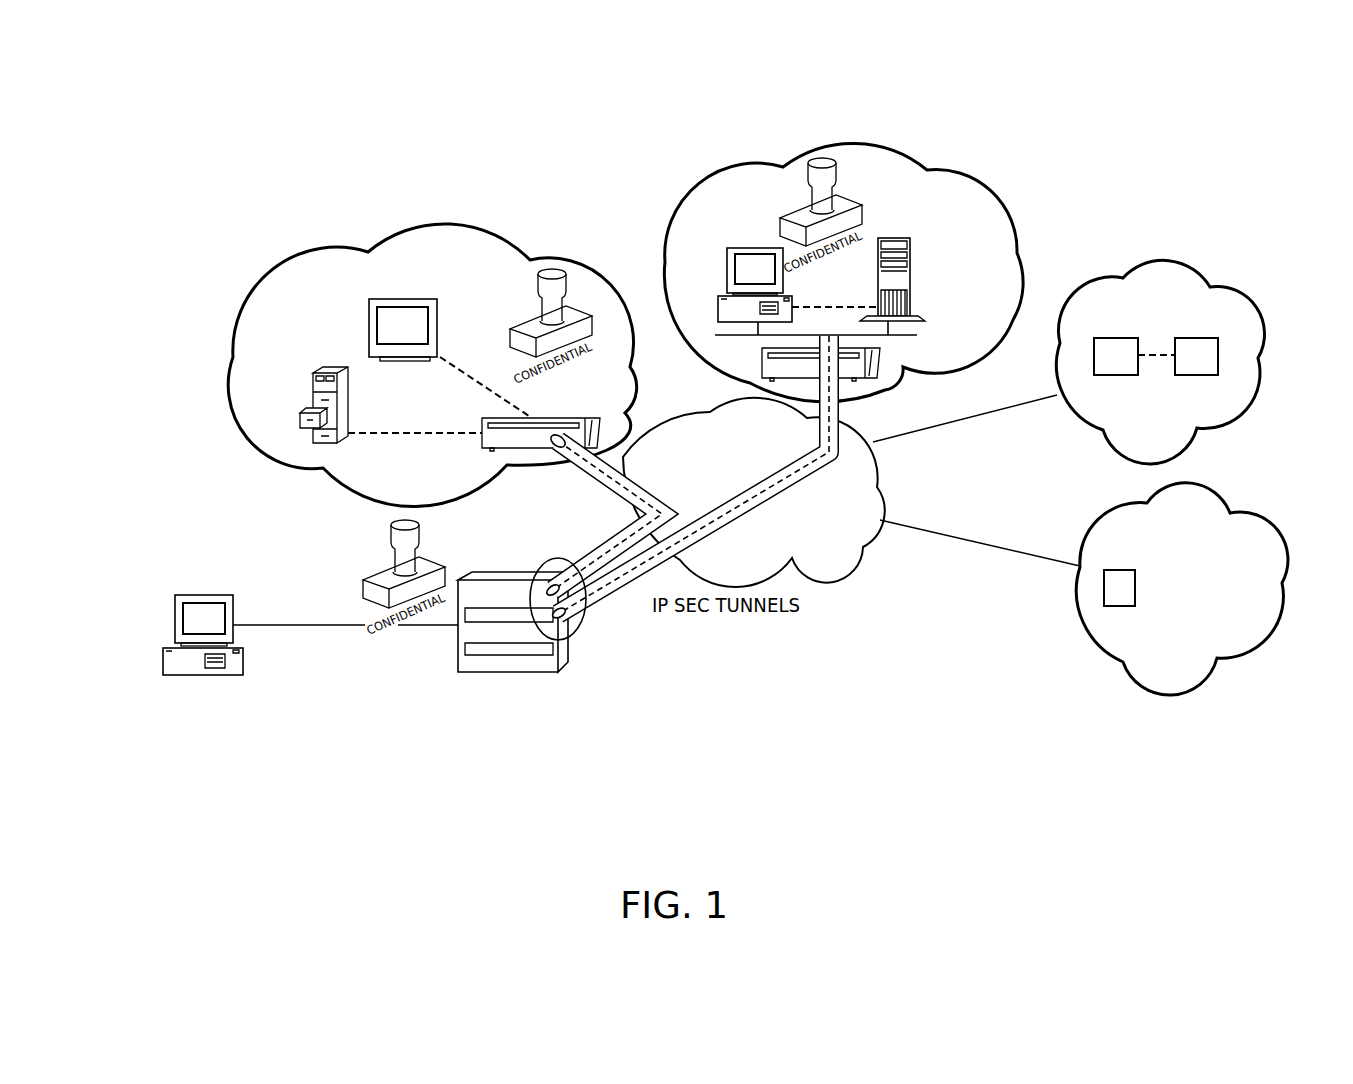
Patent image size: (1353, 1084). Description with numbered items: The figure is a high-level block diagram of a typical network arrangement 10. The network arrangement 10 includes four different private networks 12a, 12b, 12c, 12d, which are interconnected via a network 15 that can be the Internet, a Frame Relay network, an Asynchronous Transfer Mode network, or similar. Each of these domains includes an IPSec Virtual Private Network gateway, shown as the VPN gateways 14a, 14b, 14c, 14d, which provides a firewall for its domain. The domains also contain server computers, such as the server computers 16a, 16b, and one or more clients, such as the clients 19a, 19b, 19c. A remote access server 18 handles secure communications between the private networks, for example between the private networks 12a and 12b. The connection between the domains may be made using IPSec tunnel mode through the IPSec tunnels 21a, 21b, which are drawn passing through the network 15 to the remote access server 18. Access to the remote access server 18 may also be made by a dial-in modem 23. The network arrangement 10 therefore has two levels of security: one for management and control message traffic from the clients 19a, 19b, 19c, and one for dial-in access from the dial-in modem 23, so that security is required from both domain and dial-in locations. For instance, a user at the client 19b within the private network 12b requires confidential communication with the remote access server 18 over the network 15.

The network arrangement 10 is at (583, 148).
The private network 12a is at (503, 237).
The private network 12b is at (913, 160).
The private network 12c is at (1197, 270).
The private network 12d is at (1222, 492).
The VPN gateway 14a is at (633, 393).
The VPN gateway 14b is at (893, 380).
The VPN gateway 14c is at (1108, 376).
The VPN gateway 14d is at (1113, 606).
The network 15 is at (830, 592).
The server computer 16a is at (313, 390).
The server computer 16b is at (912, 240).
The remote access server 18 is at (567, 670).
The client 19a is at (440, 300).
The client 19b is at (750, 248).
The client 19c is at (1220, 358).
The IPSec tunnel 21a is at (880, 577).
The IPSec tunnel 21b is at (607, 488).
The dial-in modem 23 is at (182, 677).